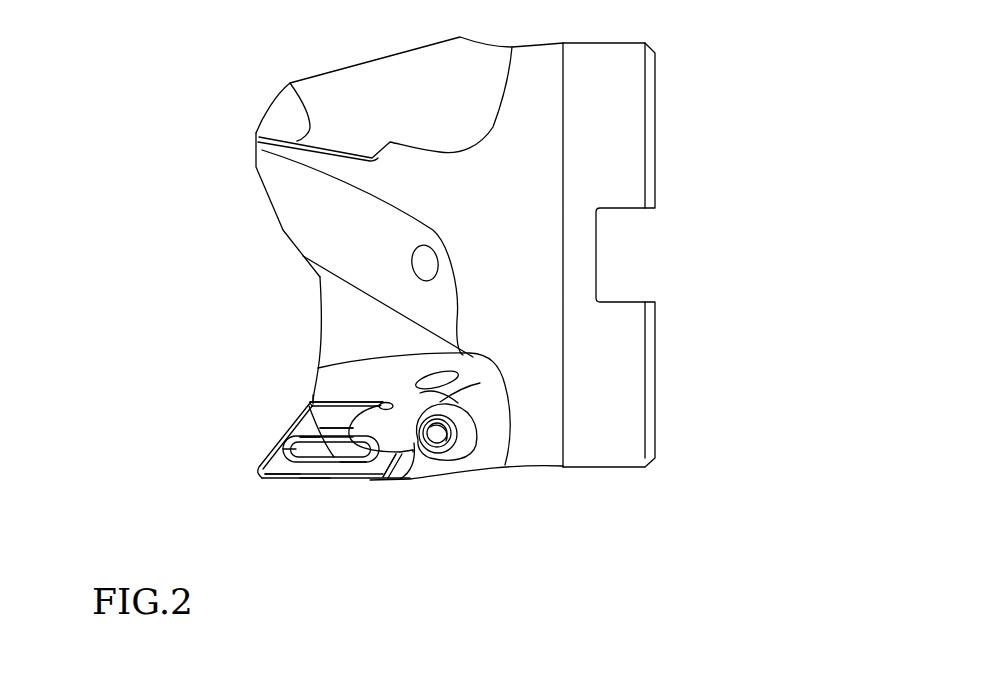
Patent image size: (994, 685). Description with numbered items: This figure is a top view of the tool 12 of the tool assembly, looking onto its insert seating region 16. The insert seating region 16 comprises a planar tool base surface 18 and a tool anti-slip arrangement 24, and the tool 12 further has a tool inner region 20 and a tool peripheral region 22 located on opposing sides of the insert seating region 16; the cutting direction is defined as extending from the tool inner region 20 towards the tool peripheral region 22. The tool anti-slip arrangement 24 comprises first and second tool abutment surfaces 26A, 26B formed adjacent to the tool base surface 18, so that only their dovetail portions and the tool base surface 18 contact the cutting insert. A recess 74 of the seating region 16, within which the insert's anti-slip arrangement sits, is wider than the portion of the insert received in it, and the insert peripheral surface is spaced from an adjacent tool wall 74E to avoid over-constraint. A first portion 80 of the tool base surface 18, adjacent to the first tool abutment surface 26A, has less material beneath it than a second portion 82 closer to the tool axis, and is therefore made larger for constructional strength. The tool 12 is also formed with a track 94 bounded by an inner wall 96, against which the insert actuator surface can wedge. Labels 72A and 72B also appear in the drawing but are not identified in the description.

The tool 12 is at (686, 40).
The insert seating region 16 is at (280, 474).
The tool base surface 18 is at (368, 478).
The tool inner region 20 is at (486, 437).
The tool peripheral region 22 is at (250, 480).
The tool anti-slip arrangement 24 is at (331, 449).
The first tool abutment surface 26A is at (350, 442).
The second tool abutment surface 26B is at (310, 449).
The first rake surface 72A is at (312, 400).
The second rake surface 72B is at (306, 436).
The recess 74 is at (370, 435).
The tool wall 74E is at (350, 403).
The first portion 80 is at (304, 486).
The second portion 82 is at (322, 401).
The track 94 is at (415, 455).
The inner wall 96 is at (406, 405).